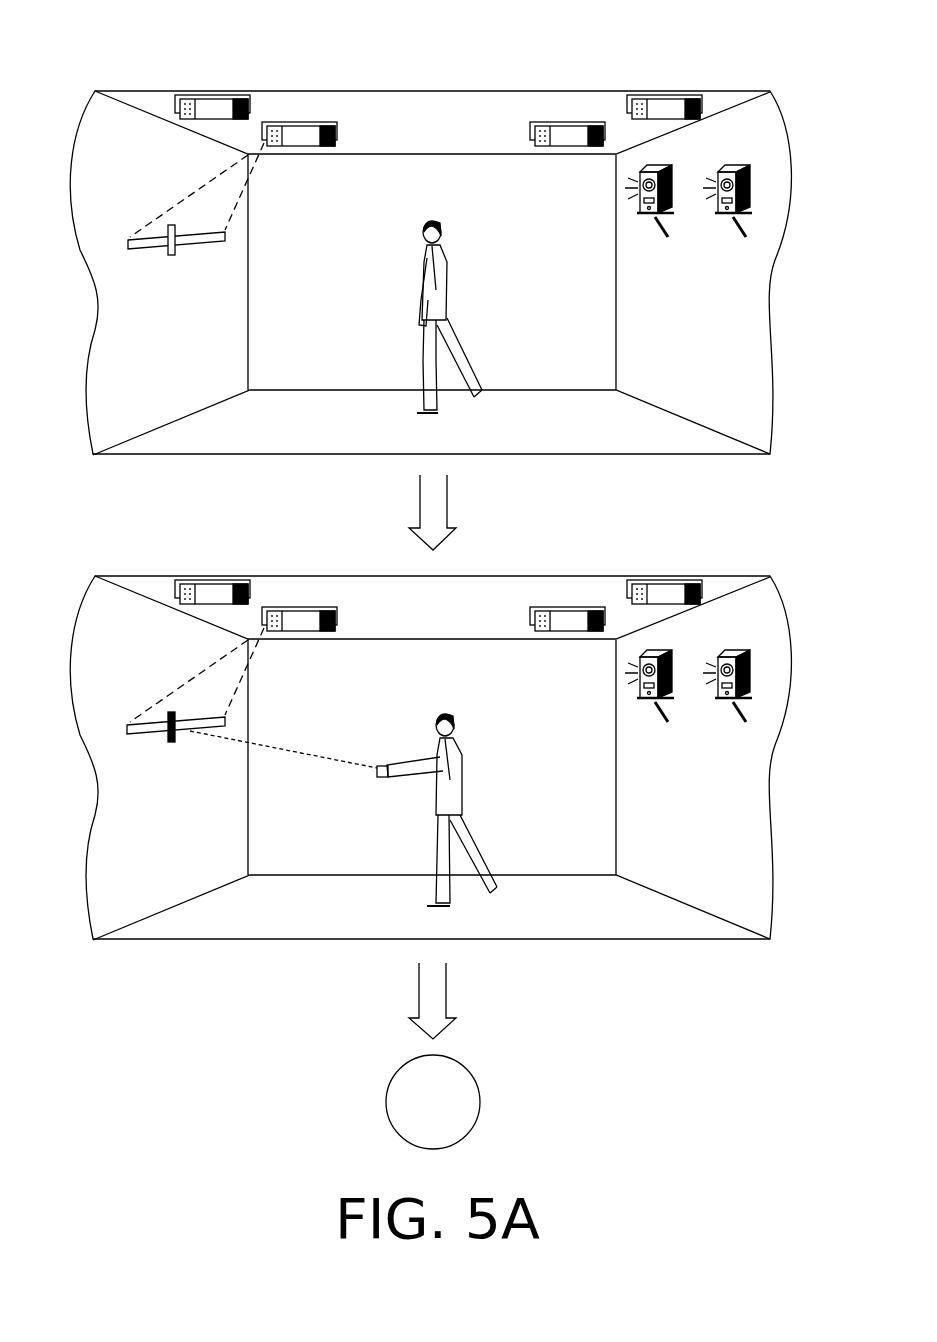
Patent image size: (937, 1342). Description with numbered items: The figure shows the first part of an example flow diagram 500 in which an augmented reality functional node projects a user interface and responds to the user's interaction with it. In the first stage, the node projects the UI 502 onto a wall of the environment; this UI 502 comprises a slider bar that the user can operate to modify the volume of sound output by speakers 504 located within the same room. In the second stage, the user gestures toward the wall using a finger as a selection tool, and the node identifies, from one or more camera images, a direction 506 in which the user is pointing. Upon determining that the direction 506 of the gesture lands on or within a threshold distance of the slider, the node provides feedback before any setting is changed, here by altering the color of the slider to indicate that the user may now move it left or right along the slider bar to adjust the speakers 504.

The flow diagram 500 is at (112, 38).
The UI 502 is at (150, 820).
The speakers 504 is at (727, 796).
The direction 506 is at (284, 733).